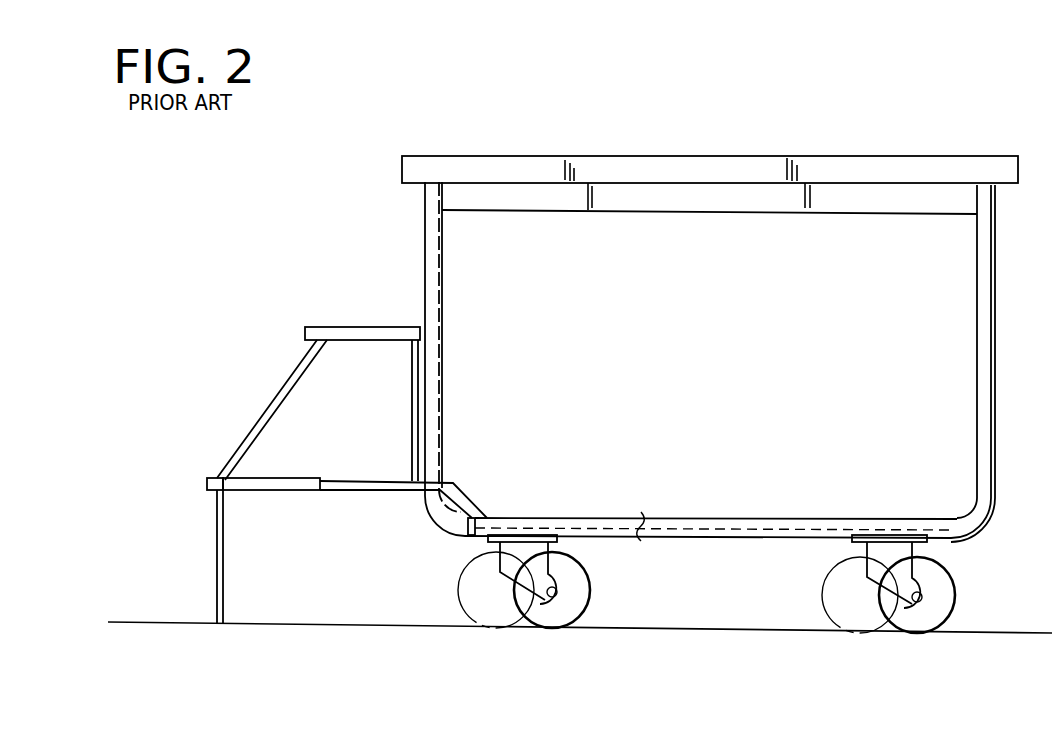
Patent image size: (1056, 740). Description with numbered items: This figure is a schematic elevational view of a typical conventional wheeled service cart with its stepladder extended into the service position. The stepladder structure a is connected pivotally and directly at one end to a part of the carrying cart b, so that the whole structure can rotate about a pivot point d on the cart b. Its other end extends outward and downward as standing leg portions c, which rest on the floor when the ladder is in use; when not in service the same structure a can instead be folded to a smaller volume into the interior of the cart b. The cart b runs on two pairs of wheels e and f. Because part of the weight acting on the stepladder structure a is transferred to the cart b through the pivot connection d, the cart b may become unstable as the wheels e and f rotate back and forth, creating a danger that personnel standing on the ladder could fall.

The stepladder structure a is at (360, 333).
The carrying cart b is at (751, 168).
The standing leg portions c is at (222, 561).
The pivot point d is at (486, 517).
The wheels e is at (592, 594).
The wheels f is at (957, 594).